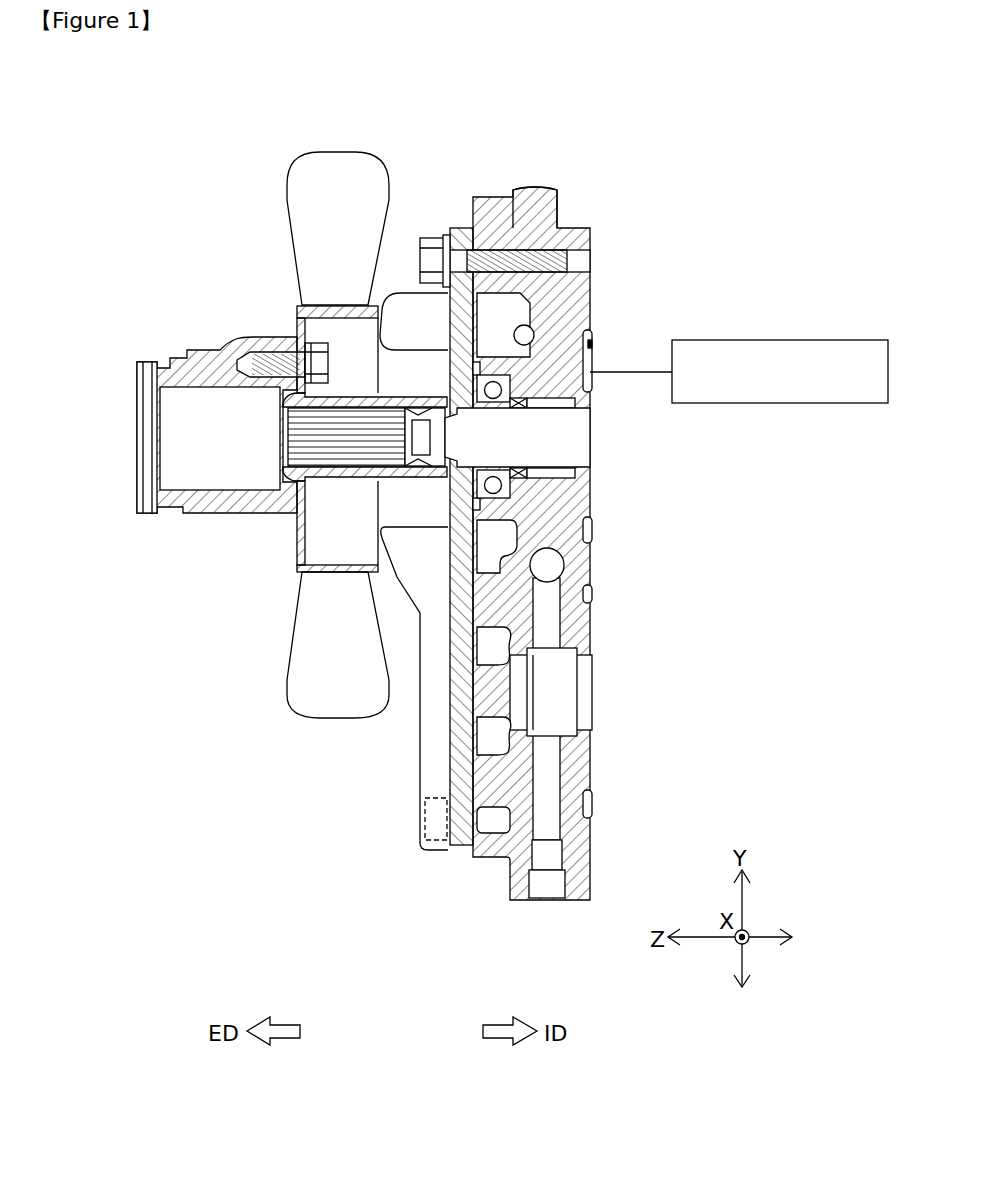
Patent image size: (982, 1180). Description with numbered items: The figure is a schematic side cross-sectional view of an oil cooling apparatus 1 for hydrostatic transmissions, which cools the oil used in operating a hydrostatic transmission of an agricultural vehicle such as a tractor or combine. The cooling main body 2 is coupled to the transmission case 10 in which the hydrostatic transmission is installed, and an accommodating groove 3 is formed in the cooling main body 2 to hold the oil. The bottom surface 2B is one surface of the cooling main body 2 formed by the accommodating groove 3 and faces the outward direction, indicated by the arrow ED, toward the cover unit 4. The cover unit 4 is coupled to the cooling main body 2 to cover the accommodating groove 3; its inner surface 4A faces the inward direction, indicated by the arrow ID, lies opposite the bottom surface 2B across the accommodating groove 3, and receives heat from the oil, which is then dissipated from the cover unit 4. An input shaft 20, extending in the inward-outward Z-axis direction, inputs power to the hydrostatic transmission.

The oil cooling apparatus 1 is at (160, 143).
The cooling main body 2 is at (475, 198).
The accommodating groove 3 is at (501, 318).
The bottom surface 2B is at (531, 338).
The cover unit 4 is at (455, 925).
The inner surface 4A is at (472, 820).
The transmission case 10 is at (806, 340).
The input shaft 20 is at (312, 443).